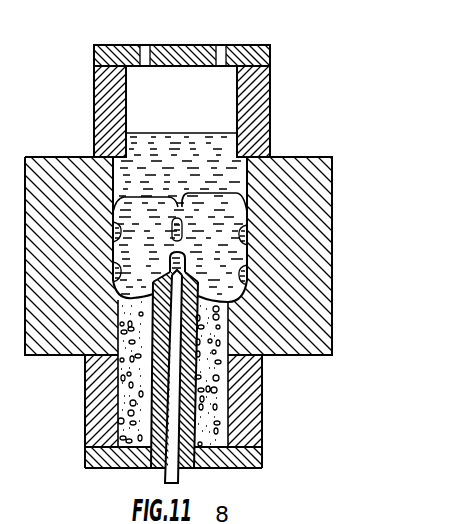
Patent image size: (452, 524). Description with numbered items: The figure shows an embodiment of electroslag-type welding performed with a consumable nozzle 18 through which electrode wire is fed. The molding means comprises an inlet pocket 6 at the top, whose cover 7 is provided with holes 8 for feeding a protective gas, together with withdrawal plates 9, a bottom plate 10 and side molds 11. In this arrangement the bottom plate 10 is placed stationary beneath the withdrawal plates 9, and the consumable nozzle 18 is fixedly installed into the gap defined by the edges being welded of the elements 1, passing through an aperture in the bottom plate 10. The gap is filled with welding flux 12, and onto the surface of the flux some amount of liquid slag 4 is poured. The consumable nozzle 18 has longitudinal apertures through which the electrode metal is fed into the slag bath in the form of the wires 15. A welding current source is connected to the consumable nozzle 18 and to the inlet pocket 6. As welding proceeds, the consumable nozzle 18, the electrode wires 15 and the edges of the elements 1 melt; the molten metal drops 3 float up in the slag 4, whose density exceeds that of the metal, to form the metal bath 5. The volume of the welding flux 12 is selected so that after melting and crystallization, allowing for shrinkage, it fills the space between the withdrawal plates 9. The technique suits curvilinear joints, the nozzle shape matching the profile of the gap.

The elements being welded 1 is at (318, 193).
The molten metal drops 3 is at (177, 215).
The liquid slag 4 is at (218, 222).
The metal bath 5 is at (147, 147).
The inlet pocket 6 is at (262, 95).
The cover 7 is at (272, 51).
The holes 8 is at (222, 50).
The withdrawal plates 9 is at (97, 417).
The bottom plate 10 is at (250, 460).
The side molds 11 is at (168, 83).
The welding flux 12 is at (220, 427).
The electrode wires 15 is at (173, 307).
The consumable nozzle 18 is at (195, 387).